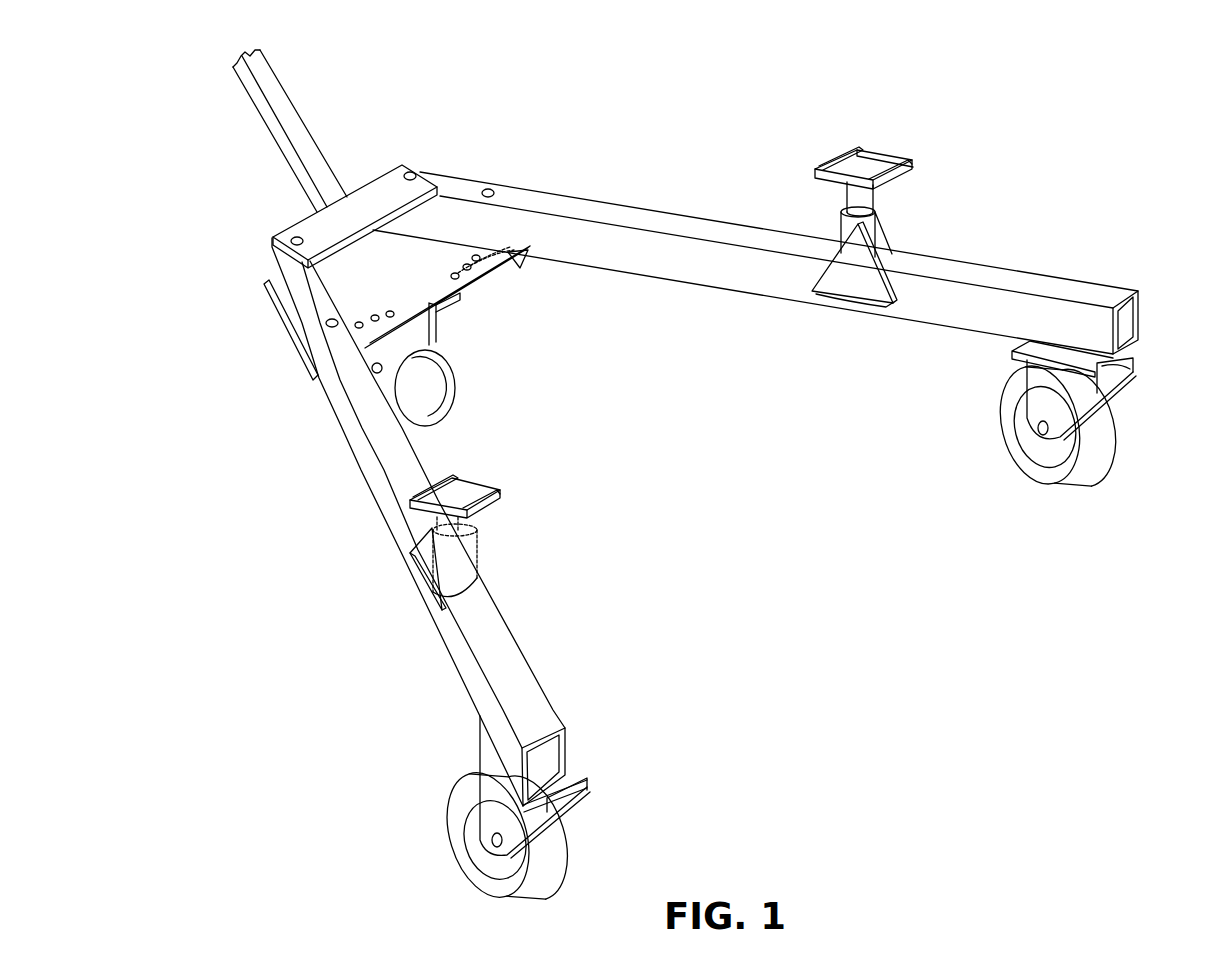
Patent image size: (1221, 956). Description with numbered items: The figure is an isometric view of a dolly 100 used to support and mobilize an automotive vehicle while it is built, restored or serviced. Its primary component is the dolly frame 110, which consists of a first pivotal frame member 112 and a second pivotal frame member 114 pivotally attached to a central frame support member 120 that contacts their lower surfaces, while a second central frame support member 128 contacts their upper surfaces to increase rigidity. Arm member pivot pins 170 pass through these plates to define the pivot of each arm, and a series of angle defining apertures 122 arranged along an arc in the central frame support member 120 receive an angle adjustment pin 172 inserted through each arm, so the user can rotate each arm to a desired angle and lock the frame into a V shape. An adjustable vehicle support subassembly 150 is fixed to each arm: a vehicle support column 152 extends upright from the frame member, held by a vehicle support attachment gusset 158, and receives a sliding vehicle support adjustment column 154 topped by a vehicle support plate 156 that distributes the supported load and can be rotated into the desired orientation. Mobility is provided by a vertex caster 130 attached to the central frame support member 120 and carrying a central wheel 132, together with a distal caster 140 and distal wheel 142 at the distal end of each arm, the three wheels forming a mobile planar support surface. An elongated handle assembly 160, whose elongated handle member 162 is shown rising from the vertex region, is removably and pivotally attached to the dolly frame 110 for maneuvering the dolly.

The dolly 100 is at (1057, 82).
The dolly frame 110 is at (1066, 247).
The first pivotal frame member 112 is at (953, 310).
The second pivotal frame member 114 is at (462, 657).
The central frame support member 120 is at (394, 287).
The angle defining apertures 122 is at (500, 255).
The second central frame support member 128 is at (381, 172).
The vertex caster 130 is at (399, 352).
The central wheel 132 is at (437, 392).
The distal caster 140 is at (500, 820).
The distal wheel 142 is at (557, 862).
The adjustable vehicle support subassembly 150 is at (826, 146).
The vehicle support column 152 is at (870, 228).
The vehicle support adjustment column 154 is at (863, 198).
The vehicle support plate 156 is at (880, 152).
The vehicle support attachment gusset 158 is at (842, 280).
The elongated handle assembly 160 is at (318, 92).
The elongated handle member 162 is at (270, 134).
The arm member pivot pins 170 is at (411, 171).
The angle adjustment pin 172 is at (489, 189).